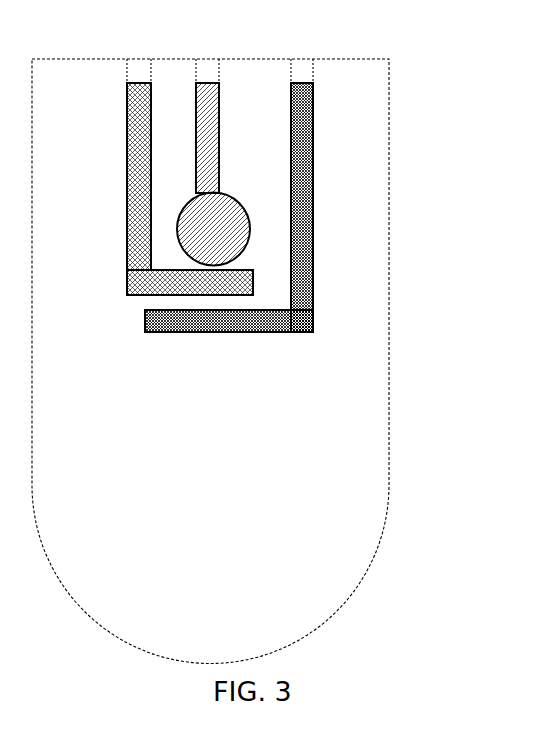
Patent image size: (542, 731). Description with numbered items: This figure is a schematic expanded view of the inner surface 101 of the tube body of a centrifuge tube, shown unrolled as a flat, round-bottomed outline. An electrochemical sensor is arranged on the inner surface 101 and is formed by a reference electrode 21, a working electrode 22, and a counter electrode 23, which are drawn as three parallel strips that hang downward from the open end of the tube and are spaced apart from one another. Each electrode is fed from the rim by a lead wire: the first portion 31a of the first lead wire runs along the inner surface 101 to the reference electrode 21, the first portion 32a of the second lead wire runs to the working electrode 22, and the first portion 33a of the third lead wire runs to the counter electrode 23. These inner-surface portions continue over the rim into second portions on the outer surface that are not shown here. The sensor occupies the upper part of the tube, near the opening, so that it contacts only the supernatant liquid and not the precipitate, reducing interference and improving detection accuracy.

The inner surface 101 is at (367, 151).
The reference electrode 21 is at (138, 108).
The working electrode 22 is at (196, 92).
The counter electrode 23 is at (291, 83).
The first portion of the first lead wire 31a is at (138, 67).
The first portion of the second lead wire 32a is at (212, 68).
The first portion of the third lead wire 33a is at (305, 70).